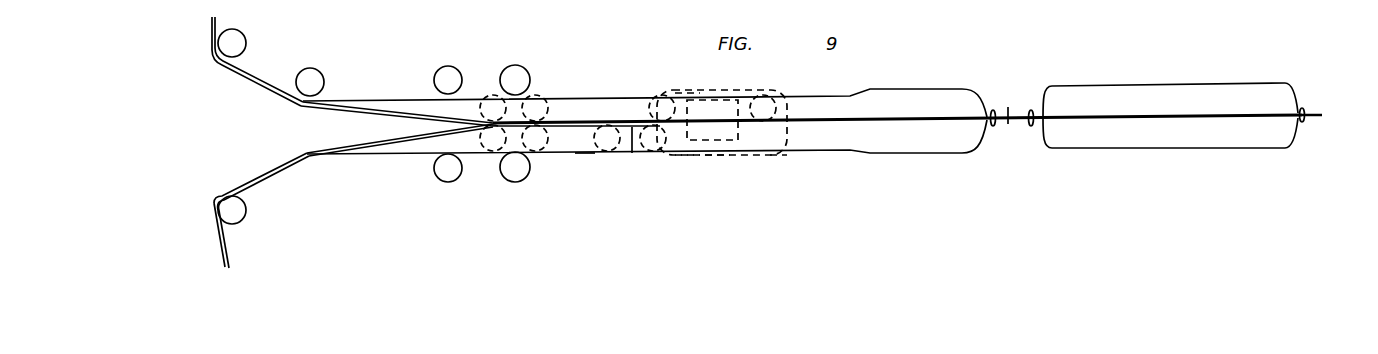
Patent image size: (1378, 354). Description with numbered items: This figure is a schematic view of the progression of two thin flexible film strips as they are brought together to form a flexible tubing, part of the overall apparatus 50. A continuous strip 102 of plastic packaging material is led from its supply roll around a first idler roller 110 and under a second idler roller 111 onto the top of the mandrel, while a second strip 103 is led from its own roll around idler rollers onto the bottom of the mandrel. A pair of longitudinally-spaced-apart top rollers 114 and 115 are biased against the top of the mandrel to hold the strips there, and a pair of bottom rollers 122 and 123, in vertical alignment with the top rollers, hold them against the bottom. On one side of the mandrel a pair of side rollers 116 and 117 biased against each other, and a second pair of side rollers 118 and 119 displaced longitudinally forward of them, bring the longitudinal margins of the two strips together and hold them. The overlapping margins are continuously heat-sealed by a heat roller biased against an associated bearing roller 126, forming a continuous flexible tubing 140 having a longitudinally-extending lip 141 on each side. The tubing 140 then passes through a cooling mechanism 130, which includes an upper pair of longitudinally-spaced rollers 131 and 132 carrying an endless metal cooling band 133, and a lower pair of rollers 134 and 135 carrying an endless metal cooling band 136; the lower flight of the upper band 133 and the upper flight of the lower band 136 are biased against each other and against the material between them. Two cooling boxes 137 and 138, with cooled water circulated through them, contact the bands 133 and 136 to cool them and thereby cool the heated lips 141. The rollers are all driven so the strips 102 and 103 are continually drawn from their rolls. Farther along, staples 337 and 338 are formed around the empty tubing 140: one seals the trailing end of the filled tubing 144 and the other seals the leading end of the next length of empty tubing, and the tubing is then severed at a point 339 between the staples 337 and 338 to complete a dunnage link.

The apparatus 50 is at (1262, 60).
The strip 102 is at (257, 76).
The strip 103 is at (265, 180).
The first idler roller 110 is at (237, 36).
The second idler roller 111 is at (313, 80).
The top roller 114 is at (442, 80).
The top roller 115 is at (515, 65).
The side roller 116 is at (493, 97).
The side roller 117 is at (487, 151).
The side roller 118 is at (537, 97).
The side roller 119 is at (550, 147).
The bottom roller 122 is at (447, 172).
The bottom roller 123 is at (515, 170).
The bearing roller 126 is at (585, 153).
The cooling mechanism 130 is at (805, 90).
The roller 131 is at (652, 100).
The roller 132 is at (777, 93).
The endless metal cooling band 133 is at (687, 93).
The roller 134 is at (638, 153).
The roller 135 is at (782, 155).
The endless metal cooling band 136 is at (687, 155).
The cooling box 137 is at (727, 100).
The cooling box 138 is at (718, 155).
The continuous flexible tubing 140 is at (575, 103).
The longitudinally-extending lip 141 is at (610, 150).
The filled tubing 144 is at (1098, 92).
The staple 337 is at (993, 108).
The staple 338 is at (1032, 108).
The point 339 is at (1013, 125).